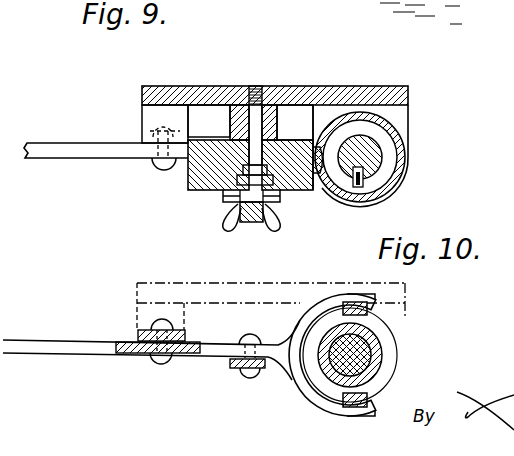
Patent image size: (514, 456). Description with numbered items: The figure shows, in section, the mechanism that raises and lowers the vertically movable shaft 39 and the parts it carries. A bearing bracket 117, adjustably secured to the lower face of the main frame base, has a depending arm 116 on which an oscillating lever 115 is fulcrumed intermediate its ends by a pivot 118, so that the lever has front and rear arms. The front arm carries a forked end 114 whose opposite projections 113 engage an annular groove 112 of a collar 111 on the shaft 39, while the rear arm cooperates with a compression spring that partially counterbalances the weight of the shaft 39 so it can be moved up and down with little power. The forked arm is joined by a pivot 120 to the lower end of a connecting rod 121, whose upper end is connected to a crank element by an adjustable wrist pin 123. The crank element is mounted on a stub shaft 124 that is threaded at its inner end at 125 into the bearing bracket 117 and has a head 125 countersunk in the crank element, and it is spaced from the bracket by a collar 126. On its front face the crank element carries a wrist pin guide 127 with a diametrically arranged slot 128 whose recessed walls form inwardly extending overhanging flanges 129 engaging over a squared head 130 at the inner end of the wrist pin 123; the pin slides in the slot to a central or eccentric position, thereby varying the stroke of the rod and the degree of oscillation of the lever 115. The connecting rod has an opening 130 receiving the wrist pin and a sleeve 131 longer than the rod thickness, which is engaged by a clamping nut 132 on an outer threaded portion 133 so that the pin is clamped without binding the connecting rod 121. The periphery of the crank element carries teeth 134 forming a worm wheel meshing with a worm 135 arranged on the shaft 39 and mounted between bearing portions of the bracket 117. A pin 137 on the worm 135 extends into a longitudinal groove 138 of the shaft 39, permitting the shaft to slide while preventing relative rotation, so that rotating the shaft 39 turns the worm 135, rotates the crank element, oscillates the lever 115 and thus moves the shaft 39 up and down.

In FIG. 9, the oscillating lever 115 is at (100, 152).
In FIG. 10, the oscillating lever 115 is at (92, 355).
In FIG. 9, the depending arm 116 is at (150, 118).
In FIG. 10, the depending arm 116 is at (138, 333).
In FIG. 9, the bearing bracket 117 is at (325, 87).
In FIG. 10, the bearing bracket 117 is at (137, 290).
In FIG. 9, the pivot 118 is at (150, 164).
In FIG. 10, the pivot 118 is at (160, 363).
In FIG. 10, the pivot 120 is at (250, 379).
In FIG. 9, the connecting rod 121 is at (285, 216).
In FIG. 10, the connecting rod 121 is at (230, 369).
In FIG. 9, the adjustable wrist pin 123 is at (253, 224).
In FIG. 9, the stub shaft 124 is at (228, 130).
In FIG. 9, the threaded inner end and head of stub shaft 125 is at (256, 86).
In FIG. 9, the collar 126 is at (280, 122).
In FIG. 9, the wrist pin guide 127 is at (190, 178).
In FIG. 9, the slot 128 is at (296, 191).
In FIG. 9, the overhanging flanges 129 is at (292, 205).
In FIG. 9, the squared head 130 is at (228, 197).
In FIG. 9, the sleeve 131 is at (245, 206).
In FIG. 9, the clamping nut 132 is at (231, 229).
In FIG. 9, the outer threaded portion 133 is at (278, 229).
In FIG. 9, the teeth 134 is at (313, 150).
In FIG. 9, the worm 135 is at (397, 140).
In FIG. 9, the vertically movable shaft 39 is at (372, 157).
In FIG. 10, the vertically movable shaft 39 is at (343, 370).
In FIG. 9, the pin 137 is at (380, 194).
In FIG. 9, the longitudinal groove 138 is at (375, 177).
In FIG. 10, the collar 111 is at (393, 331).
In FIG. 10, the annular groove 112 is at (388, 352).
In FIG. 10, the projections 113 is at (372, 308).
In FIG. 10, the forked end 114 is at (329, 418).